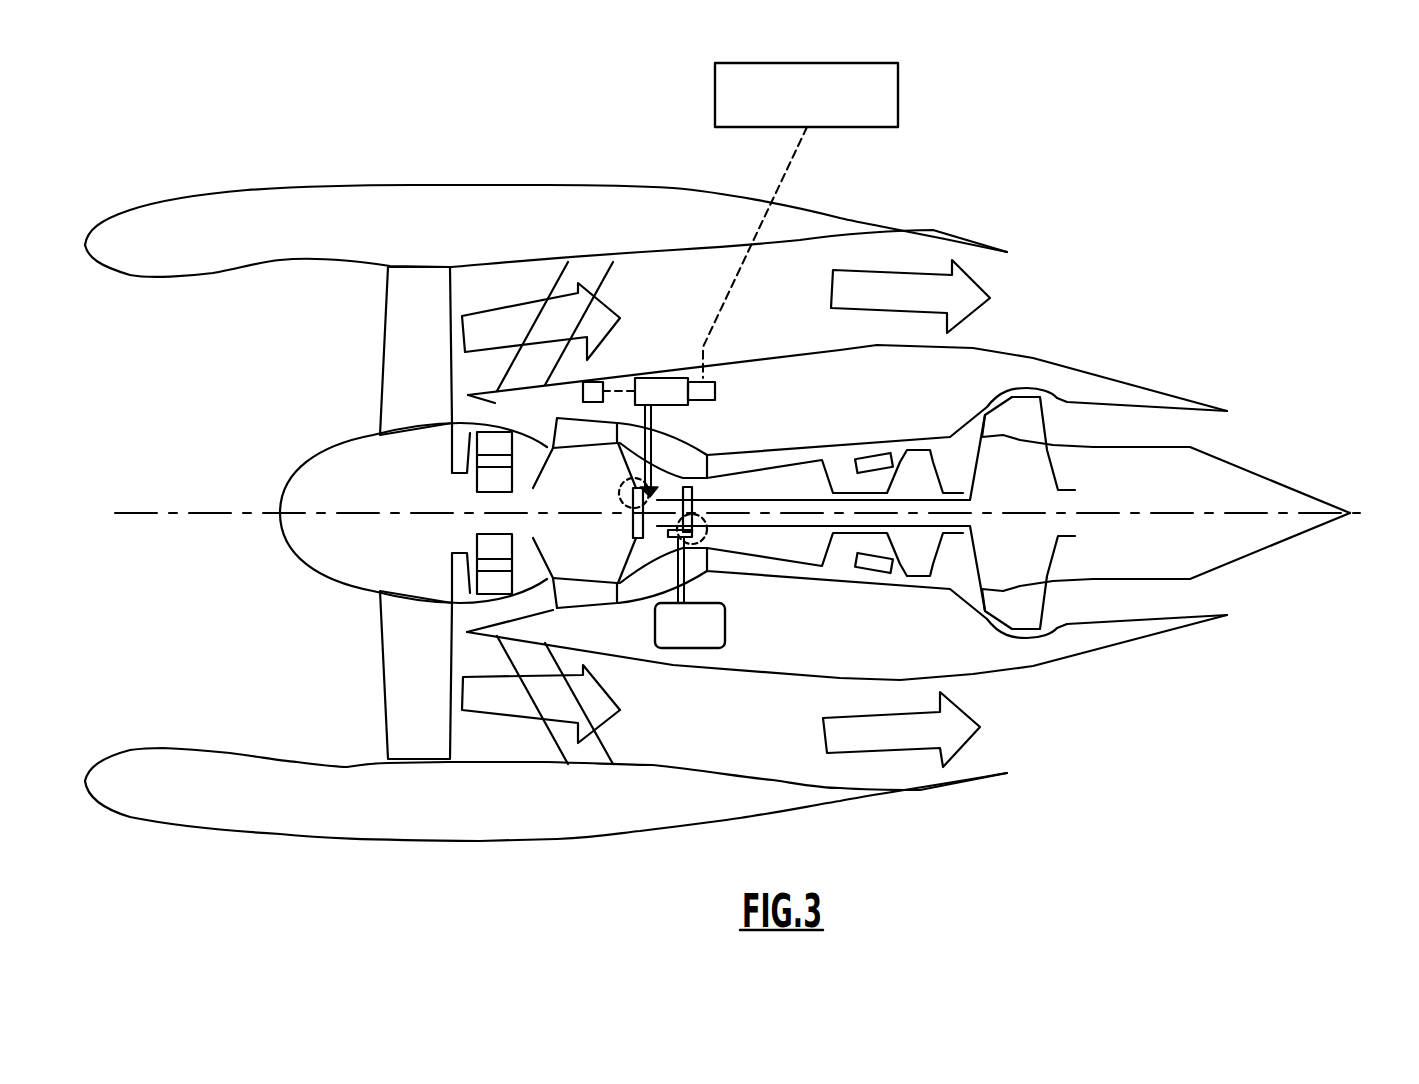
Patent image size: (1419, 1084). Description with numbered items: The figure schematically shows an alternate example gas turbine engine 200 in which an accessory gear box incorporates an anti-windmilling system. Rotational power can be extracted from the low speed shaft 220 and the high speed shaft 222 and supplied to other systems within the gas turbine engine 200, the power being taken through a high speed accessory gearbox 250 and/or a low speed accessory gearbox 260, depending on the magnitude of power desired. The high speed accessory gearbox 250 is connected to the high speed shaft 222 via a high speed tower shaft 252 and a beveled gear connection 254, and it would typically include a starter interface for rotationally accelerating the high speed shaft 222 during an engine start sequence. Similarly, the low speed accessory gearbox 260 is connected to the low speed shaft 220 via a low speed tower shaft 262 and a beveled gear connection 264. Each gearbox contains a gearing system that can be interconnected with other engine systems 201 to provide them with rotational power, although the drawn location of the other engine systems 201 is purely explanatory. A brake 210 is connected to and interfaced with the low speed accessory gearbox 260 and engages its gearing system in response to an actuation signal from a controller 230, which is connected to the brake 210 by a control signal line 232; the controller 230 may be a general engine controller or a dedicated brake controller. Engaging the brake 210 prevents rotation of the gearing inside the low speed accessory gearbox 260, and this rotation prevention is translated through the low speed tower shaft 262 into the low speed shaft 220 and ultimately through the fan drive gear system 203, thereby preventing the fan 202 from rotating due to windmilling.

The gas turbine engine 200 is at (353, 147).
The other engine systems 201 is at (583, 392).
The fan 202 is at (398, 375).
The fan drive gear system 203 is at (485, 476).
The brake 210 is at (706, 378).
The low speed shaft 220 is at (647, 549).
The high speed shaft 222 is at (833, 540).
The controller 230 is at (898, 93).
The control signal line 232 is at (787, 167).
The high speed accessory gearbox 250 is at (697, 633).
The high speed tower shaft 252 is at (685, 590).
The beveled gear connection 254 is at (687, 535).
The low speed accessory gearbox 260 is at (652, 378).
The low speed tower shaft 262 is at (652, 420).
The beveled gear connection 264 is at (619, 490).